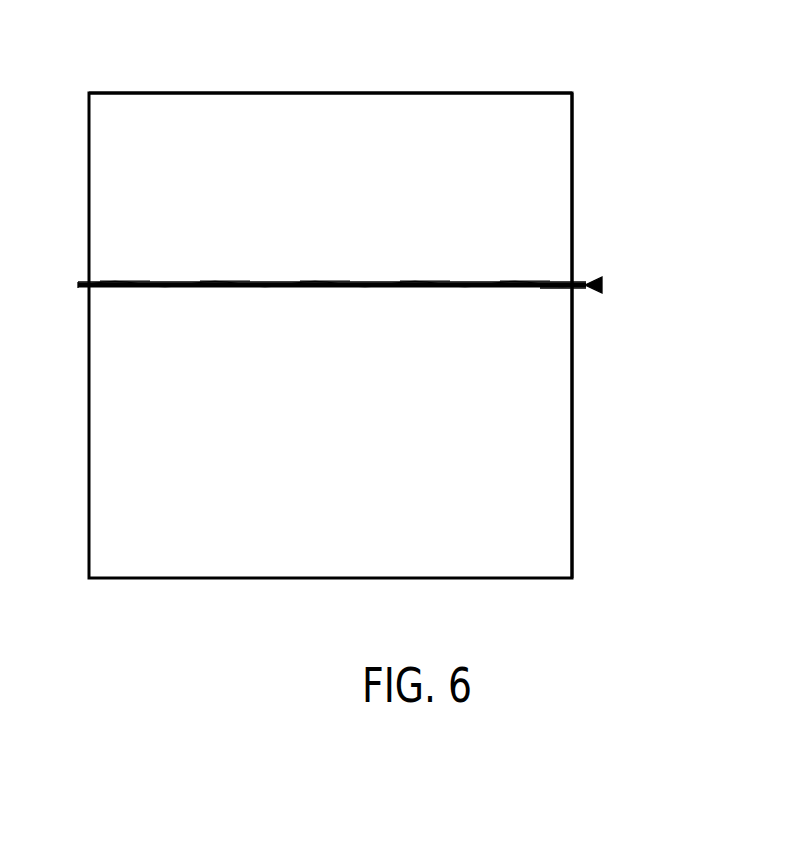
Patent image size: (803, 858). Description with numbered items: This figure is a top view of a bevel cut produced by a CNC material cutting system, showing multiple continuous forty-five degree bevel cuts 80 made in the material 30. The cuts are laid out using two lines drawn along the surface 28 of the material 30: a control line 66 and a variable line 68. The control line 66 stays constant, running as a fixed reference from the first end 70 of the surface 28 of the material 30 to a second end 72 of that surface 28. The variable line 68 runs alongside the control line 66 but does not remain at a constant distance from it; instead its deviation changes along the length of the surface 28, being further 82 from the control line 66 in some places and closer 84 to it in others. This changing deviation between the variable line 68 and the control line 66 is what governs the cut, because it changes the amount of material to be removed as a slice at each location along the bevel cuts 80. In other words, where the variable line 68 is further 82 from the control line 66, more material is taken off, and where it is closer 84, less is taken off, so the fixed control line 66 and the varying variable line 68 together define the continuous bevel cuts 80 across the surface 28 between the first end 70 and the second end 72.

The surface 28 is at (157, 99).
The material 30 is at (313, 93).
The control line 66 is at (602, 288).
The variable line 68 is at (602, 282).
The first end 70 is at (572, 292).
The second end 72 is at (85, 288).
The multiple continuous 45 degree bevel cuts 80 is at (572, 210).
The further 82 is at (318, 283).
The closer 84 is at (262, 283).